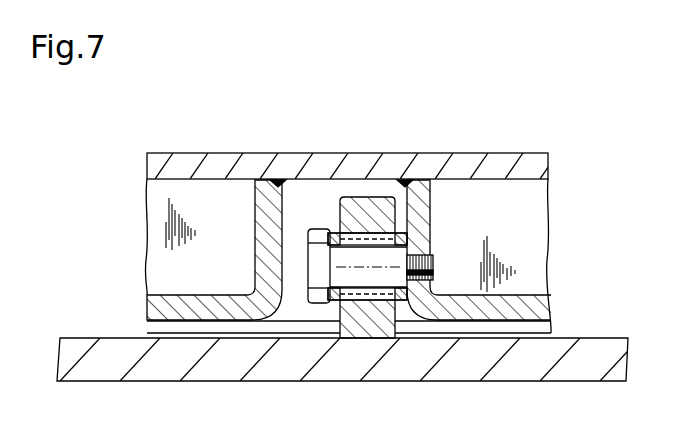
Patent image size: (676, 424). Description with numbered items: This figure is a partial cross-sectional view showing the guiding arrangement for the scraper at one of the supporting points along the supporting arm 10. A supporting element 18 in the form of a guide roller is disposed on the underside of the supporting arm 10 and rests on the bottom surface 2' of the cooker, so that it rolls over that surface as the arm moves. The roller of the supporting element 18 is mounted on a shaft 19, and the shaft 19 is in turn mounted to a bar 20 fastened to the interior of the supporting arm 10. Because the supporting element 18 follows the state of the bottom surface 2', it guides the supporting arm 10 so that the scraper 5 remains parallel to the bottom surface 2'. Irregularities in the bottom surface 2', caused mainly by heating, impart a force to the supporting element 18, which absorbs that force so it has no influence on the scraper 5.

The supporting arm 10 is at (182, 165).
The supporting element 18 is at (373, 203).
The shaft 19 is at (348, 256).
The bar 20 is at (420, 210).
The scraper 5 is at (147, 328).
The bottom surface 2' is at (342, 337).